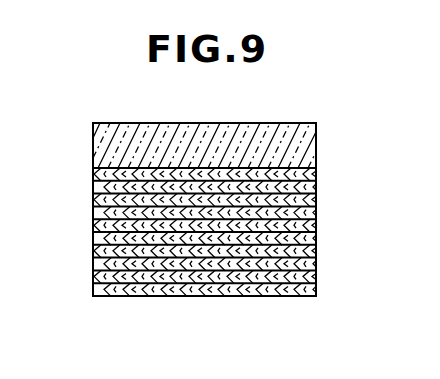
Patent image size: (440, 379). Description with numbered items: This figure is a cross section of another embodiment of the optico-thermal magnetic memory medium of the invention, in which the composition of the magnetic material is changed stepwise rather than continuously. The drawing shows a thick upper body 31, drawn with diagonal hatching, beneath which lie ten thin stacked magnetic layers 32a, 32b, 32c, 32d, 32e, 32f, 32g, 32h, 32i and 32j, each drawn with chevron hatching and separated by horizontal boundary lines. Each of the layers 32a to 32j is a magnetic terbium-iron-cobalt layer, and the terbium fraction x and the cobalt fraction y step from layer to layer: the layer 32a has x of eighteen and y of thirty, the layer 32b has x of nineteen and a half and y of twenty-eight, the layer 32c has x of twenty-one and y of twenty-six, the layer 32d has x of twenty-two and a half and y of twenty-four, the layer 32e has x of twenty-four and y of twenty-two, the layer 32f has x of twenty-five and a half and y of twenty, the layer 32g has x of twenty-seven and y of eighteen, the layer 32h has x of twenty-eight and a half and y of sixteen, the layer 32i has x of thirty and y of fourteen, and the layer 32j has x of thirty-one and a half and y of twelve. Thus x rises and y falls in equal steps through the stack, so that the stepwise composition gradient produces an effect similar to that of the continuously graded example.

The substrate 31 is at (320, 139).
The magnetic TbFeCo layer 32a is at (317, 174).
The magnetic TbFeCo layer 32b is at (317, 187).
The magnetic TbFeCo layer 32c is at (317, 200).
The magnetic TbFeCo layer 32d is at (317, 213).
The magnetic TbFeCo layer 32e is at (317, 226).
The magnetic TbFeCo layer 32f is at (317, 239).
The magnetic TbFeCo layer 32g is at (93, 252).
The magnetic TbFeCo layer 32h is at (93, 265).
The magnetic TbFeCo layer 32i is at (93, 278).
The magnetic TbFeCo layer 32j is at (93, 290).